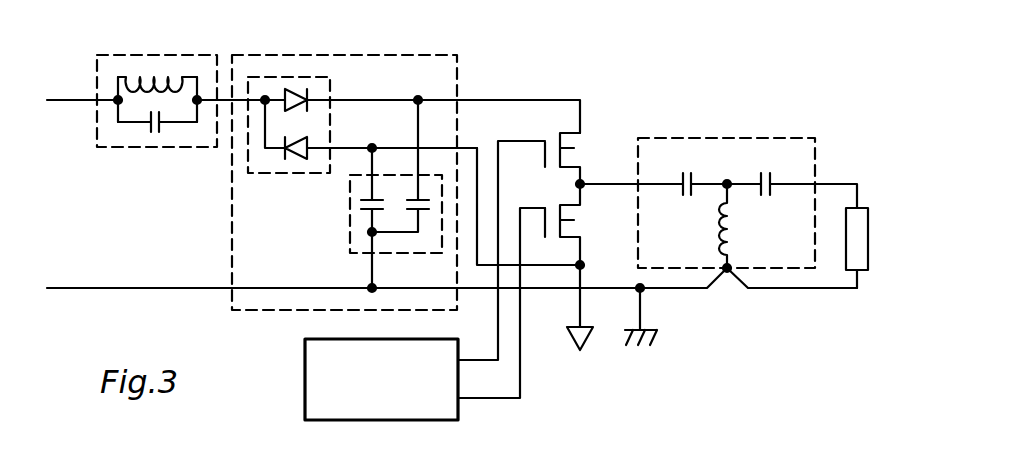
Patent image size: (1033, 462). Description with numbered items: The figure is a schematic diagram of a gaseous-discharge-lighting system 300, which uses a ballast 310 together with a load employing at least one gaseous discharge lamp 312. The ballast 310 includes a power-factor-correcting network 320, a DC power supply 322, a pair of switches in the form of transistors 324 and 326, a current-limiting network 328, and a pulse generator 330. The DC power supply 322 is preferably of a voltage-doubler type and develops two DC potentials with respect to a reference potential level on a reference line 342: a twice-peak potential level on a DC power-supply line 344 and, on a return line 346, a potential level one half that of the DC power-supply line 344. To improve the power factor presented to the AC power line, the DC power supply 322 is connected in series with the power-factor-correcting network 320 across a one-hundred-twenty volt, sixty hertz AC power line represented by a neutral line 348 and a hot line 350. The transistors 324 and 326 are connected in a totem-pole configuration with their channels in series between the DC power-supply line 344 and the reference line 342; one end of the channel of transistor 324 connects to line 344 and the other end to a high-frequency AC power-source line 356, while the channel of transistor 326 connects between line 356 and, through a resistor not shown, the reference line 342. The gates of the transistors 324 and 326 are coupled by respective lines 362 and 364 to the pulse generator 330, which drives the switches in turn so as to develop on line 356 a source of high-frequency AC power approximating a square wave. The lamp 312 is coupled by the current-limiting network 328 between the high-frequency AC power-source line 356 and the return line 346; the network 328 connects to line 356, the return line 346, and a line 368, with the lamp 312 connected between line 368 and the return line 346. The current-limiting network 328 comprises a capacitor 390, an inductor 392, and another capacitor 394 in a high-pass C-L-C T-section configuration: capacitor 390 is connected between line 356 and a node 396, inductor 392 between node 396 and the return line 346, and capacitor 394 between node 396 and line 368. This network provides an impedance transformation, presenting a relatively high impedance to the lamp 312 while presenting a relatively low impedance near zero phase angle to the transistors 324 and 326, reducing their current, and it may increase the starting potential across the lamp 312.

The gaseous-discharge-lighting system 300 is at (638, 372).
The ballast 310 is at (503, 408).
The gaseous discharge lamp 312 is at (869, 219).
The power-factor-correcting network 320 is at (152, 148).
The DC power supply 322 is at (231, 223).
The switch (transistor) 324 is at (574, 148).
The switch (transistor) 326 is at (574, 220).
The current-limiting network 328 is at (761, 138).
The pulse generator 330 is at (305, 358).
The reference line 342 is at (591, 252).
The DC power-supply line 344 is at (582, 103).
The return line 346 is at (660, 291).
The neutral line 348 is at (58, 279).
The hot line 350 is at (53, 103).
The high-frequency AC power-source line 356 is at (631, 184).
The line 362 is at (497, 327).
The line 364 is at (520, 378).
The line 368 is at (829, 184).
The capacitor 390 is at (692, 171).
The inductor 392 is at (720, 216).
The capacitor 394 is at (765, 176).
The node 396 is at (730, 188).